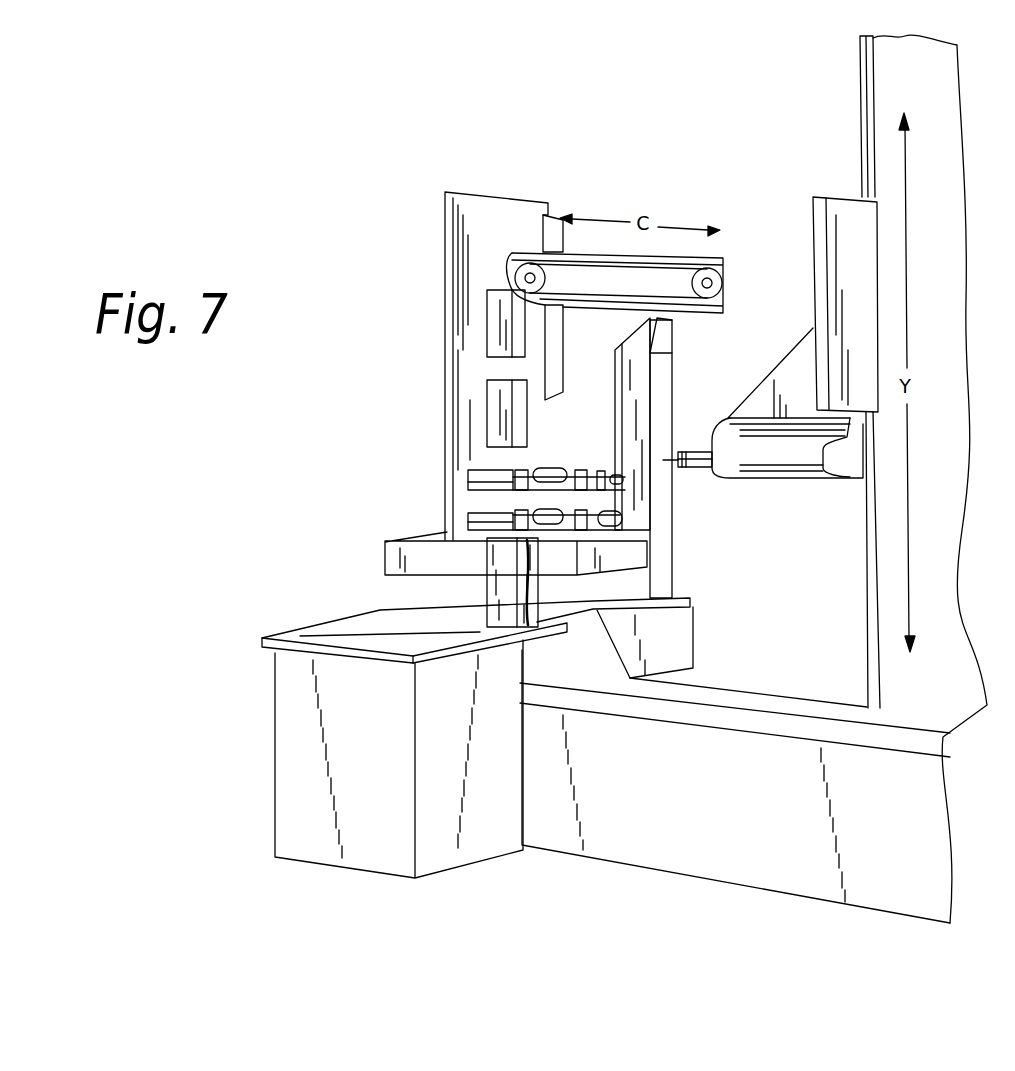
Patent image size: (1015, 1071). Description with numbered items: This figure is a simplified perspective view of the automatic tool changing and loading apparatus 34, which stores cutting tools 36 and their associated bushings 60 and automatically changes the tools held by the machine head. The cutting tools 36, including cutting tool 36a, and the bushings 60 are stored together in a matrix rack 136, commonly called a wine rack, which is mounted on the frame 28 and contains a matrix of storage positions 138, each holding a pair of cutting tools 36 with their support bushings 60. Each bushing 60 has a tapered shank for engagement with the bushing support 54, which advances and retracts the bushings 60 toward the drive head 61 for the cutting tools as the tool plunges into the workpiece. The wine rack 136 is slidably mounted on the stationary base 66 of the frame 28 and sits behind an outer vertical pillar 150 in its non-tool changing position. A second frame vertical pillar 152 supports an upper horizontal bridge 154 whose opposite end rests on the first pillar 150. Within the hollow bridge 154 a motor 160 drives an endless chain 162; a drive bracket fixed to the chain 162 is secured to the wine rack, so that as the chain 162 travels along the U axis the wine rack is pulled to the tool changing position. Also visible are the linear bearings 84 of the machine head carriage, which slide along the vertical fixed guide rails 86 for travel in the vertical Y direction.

The frame 28 is at (709, 594).
The automatic tool changing and loading apparatus 34 is at (432, 420).
The cutting tools 36 is at (560, 468).
The cutting tool 36a is at (694, 470).
The bushing support 54 is at (697, 452).
The bushings 60 is at (557, 512).
The drive head 61 is at (807, 465).
The stationary base 66 is at (569, 674).
The linear bearings 84 is at (866, 257).
The vertical fixed guide rails 86 is at (868, 80).
The matrix rack 136 is at (456, 503).
The storage positions 138 is at (578, 472).
The outer vertical pillar 150 is at (487, 593).
The second frame vertical pillar 152 is at (692, 536).
The horizontal bridge 154 is at (705, 248).
The motor 160 is at (531, 263).
The endless chain 162 is at (594, 264).